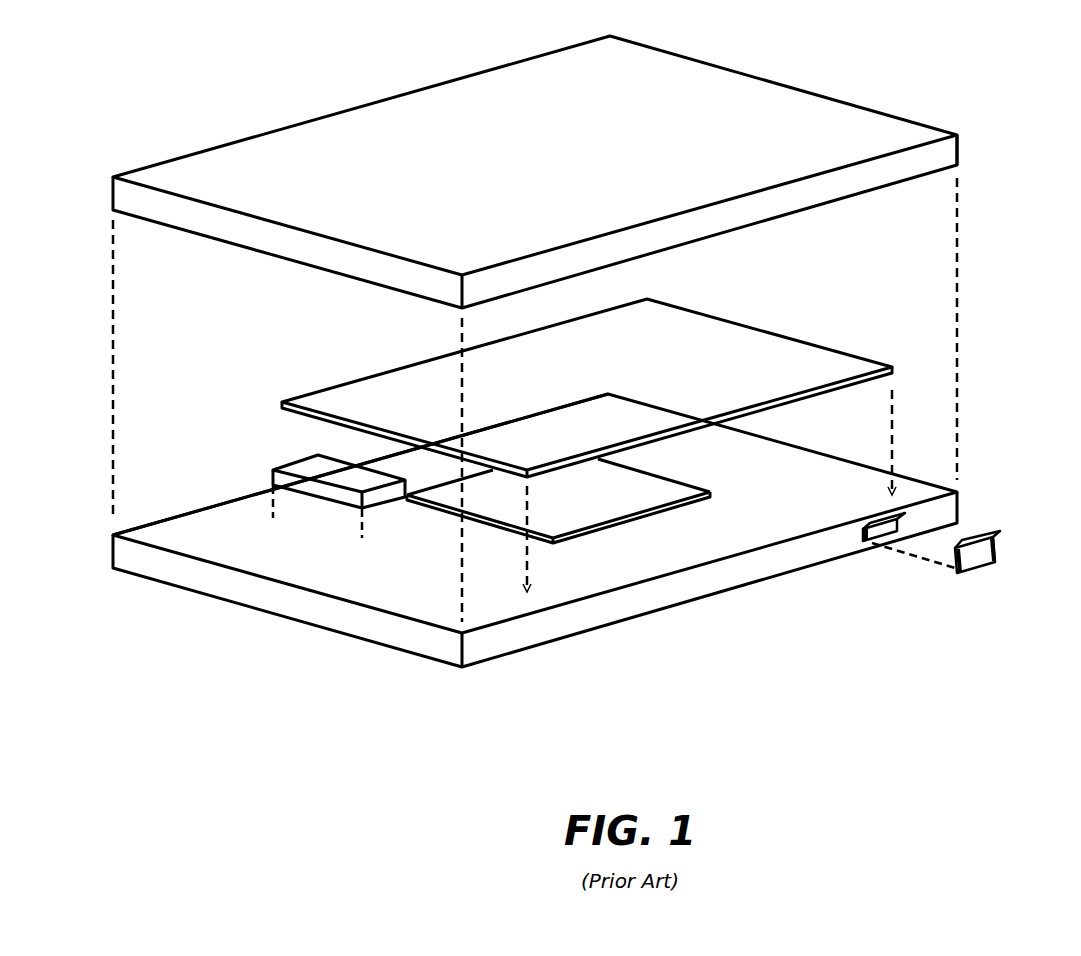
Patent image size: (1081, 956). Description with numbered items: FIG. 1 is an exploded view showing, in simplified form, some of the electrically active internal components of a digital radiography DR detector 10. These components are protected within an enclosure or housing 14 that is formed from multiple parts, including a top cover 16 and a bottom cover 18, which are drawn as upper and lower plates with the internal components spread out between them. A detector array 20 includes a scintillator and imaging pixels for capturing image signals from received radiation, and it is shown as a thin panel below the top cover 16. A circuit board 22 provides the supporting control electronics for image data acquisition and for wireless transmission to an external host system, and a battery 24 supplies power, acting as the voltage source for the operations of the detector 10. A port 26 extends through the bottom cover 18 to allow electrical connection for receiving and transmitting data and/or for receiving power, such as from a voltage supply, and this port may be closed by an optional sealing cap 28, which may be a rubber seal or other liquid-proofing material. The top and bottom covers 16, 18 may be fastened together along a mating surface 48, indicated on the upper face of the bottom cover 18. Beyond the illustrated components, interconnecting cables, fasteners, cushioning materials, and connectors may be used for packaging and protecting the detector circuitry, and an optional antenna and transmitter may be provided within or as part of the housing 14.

The DR detector 10 is at (203, 78).
The housing 14 is at (845, 84).
The top cover 16 is at (958, 137).
The bottom cover 18 is at (240, 602).
The detector array 20 is at (790, 343).
The circuit board 22 is at (711, 492).
The battery 24 is at (275, 470).
The port 26 is at (870, 543).
The sealing cap 28 is at (977, 572).
The mating surface 48 is at (182, 522).